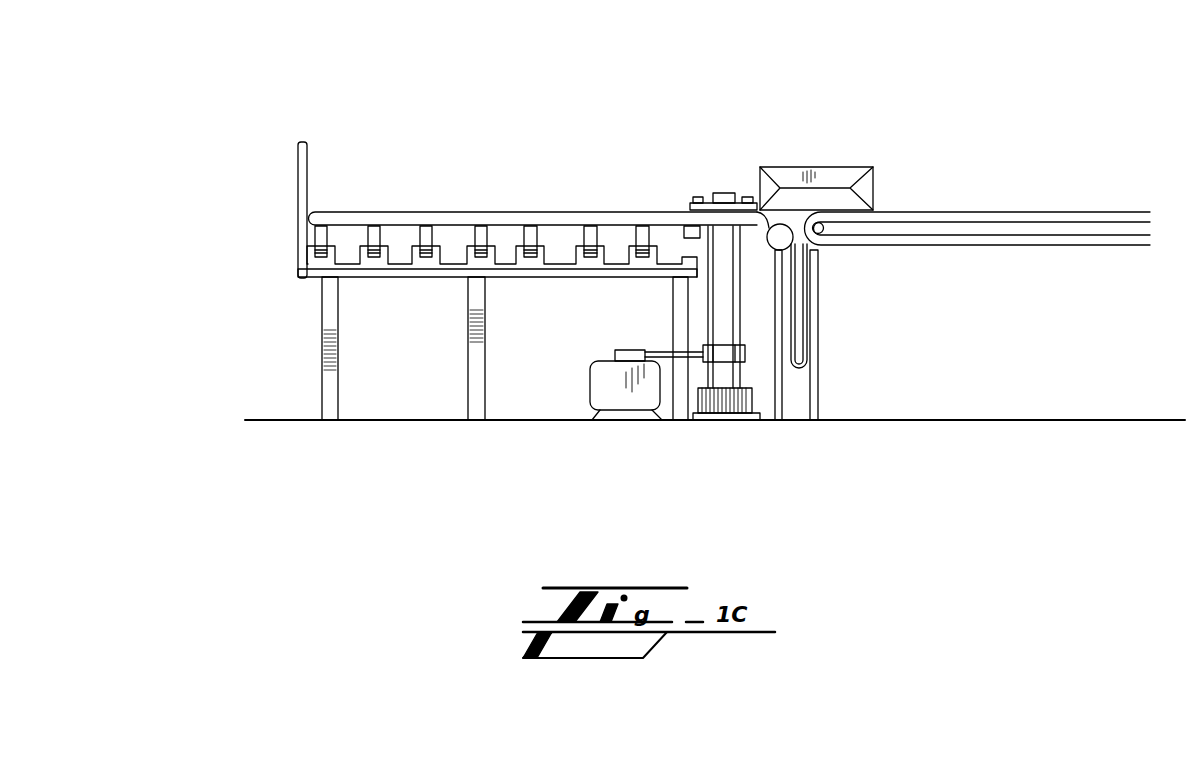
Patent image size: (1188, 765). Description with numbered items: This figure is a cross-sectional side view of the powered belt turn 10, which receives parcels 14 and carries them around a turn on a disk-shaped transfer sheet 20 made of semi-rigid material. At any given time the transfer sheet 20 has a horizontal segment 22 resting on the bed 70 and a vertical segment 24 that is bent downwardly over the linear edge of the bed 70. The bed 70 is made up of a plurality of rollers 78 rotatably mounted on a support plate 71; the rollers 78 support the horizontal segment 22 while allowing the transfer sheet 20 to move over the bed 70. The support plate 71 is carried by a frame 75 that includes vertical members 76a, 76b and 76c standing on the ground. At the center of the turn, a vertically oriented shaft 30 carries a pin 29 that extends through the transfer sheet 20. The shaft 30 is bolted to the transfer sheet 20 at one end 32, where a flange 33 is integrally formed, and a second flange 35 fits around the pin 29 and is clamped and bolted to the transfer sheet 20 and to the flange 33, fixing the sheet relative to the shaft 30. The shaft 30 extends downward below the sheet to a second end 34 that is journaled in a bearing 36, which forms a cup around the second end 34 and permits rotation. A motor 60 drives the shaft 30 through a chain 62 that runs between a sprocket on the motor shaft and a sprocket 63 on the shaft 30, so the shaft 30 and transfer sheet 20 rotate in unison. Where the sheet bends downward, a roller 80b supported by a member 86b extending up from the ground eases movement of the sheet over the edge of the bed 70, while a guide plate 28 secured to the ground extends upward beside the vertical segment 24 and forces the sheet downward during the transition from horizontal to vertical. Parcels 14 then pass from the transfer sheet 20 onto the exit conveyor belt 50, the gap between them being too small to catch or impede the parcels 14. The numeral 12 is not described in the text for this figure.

The powered belt turn 10 is at (643, 130).
The end stop plate 12 is at (297, 192).
The parcel 14 is at (792, 167).
The transfer sheet 20 is at (337, 212).
The horizontal segment 22 is at (400, 212).
The vertical segment 24 is at (782, 306).
The guide plate 28 is at (978, 195).
The pin 29 is at (730, 197).
The shaft 30 is at (723, 283).
The first end of shaft 32 is at (737, 195).
The flange 33 is at (690, 236).
The second end of shaft 34 is at (748, 376).
The second flange 35 is at (694, 200).
The bearing 36 is at (723, 405).
The exit conveyor belt 50 is at (925, 212).
The motor 60 is at (605, 385).
The chain 62 is at (640, 350).
The sprocket 63 is at (703, 348).
The bed 70 is at (434, 192).
The support plate 71 is at (298, 265).
The frame 75 is at (442, 348).
The vertical member 76a is at (338, 342).
The vertical member 76b is at (673, 312).
The vertical member 76c is at (485, 314).
The rollers 78 is at (528, 233).
The roller 80b is at (805, 212).
The member 86b is at (795, 350).